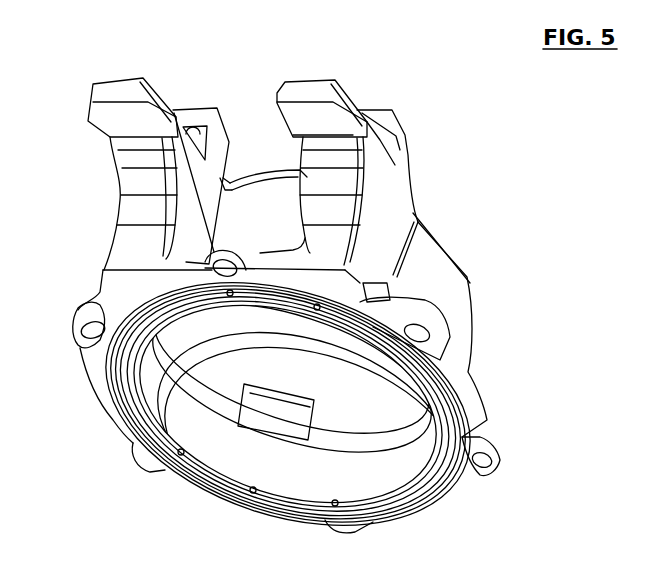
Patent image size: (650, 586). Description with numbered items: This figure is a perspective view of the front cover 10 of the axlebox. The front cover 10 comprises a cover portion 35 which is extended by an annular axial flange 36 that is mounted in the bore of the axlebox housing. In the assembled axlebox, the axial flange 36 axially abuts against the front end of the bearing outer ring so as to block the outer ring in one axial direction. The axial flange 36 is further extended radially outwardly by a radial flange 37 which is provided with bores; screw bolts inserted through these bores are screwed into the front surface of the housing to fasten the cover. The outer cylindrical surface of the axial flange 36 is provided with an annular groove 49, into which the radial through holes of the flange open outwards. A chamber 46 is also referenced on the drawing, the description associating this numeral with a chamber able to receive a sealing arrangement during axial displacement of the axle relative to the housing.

The front cover 10 is at (88, 282).
The cover portion 35 is at (243, 176).
The annular groove 49 is at (400, 302).
The radial flange 37 is at (477, 388).
The annular axial flange 36 is at (470, 473).
The rear chamber 46 is at (335, 520).